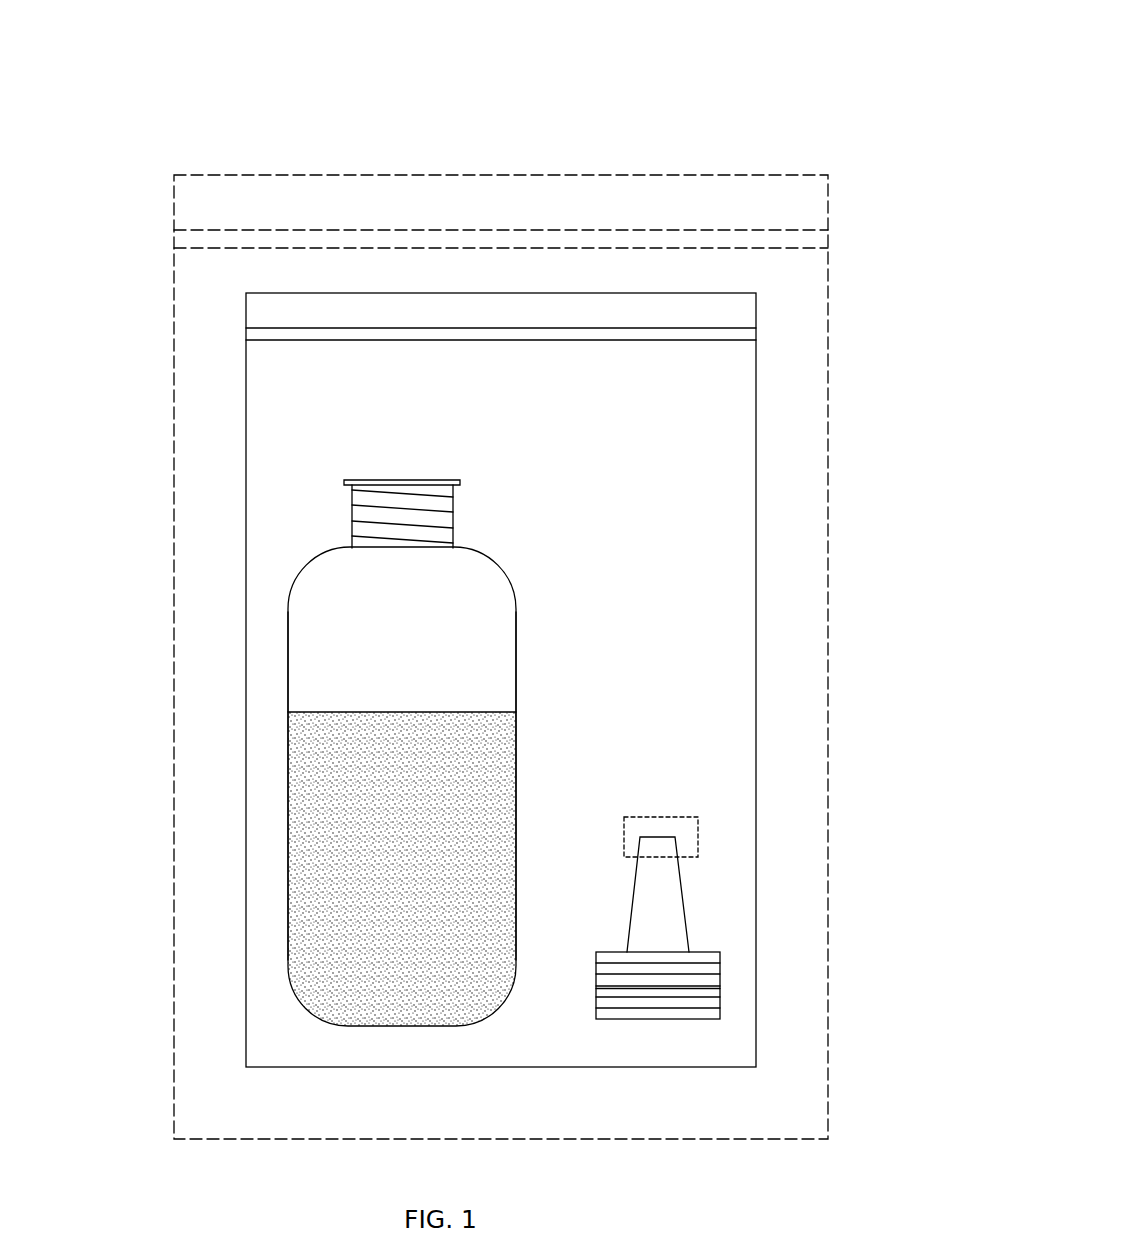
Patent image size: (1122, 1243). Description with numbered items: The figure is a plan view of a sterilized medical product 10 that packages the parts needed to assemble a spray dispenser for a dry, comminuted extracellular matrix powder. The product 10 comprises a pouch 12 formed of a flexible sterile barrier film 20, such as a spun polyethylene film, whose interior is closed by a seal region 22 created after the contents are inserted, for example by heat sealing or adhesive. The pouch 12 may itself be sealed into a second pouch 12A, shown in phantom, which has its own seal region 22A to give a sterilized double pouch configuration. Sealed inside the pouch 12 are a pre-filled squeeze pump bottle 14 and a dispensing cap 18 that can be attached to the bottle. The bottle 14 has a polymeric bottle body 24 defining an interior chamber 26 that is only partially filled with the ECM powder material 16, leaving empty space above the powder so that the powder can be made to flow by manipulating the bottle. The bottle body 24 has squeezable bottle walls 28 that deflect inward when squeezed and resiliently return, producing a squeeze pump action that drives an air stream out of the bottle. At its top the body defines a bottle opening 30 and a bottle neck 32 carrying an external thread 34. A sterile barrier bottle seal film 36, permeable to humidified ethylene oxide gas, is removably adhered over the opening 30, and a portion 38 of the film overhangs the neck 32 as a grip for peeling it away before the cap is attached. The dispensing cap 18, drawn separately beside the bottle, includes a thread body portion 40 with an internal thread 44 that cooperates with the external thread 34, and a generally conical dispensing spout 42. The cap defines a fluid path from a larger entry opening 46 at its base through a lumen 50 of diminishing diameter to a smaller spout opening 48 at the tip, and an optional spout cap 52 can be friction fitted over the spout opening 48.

The medical product 10 is at (748, 66).
The pouch 12 is at (757, 405).
The second pouch 12A is at (173, 311).
The squeeze pump bottle 14 is at (280, 697).
The ECM powder material 16 is at (313, 827).
The dispensing cap 18 is at (745, 996).
The flexible sterile barrier film 20 is at (720, 472).
The seal region 22 is at (733, 335).
The seal region of second pouch 22A is at (212, 240).
The bottle body 24 is at (288, 626).
The interior chamber 26 is at (460, 617).
The squeezable bottle walls 28 is at (517, 645).
The bottle opening 30 is at (428, 462).
The bottle neck 32 is at (350, 515).
The external thread 34 is at (445, 521).
The bottle seal film 36 is at (418, 482).
The overhanging portion 38 is at (373, 492).
The thread body portion 40 is at (595, 968).
The dispensing spout 42 is at (628, 915).
The internal thread 44 is at (708, 973).
The entry opening 46 is at (674, 1024).
The spout opening 48 is at (664, 803).
The lumen 50 is at (664, 887).
The spout cap 52 is at (622, 835).